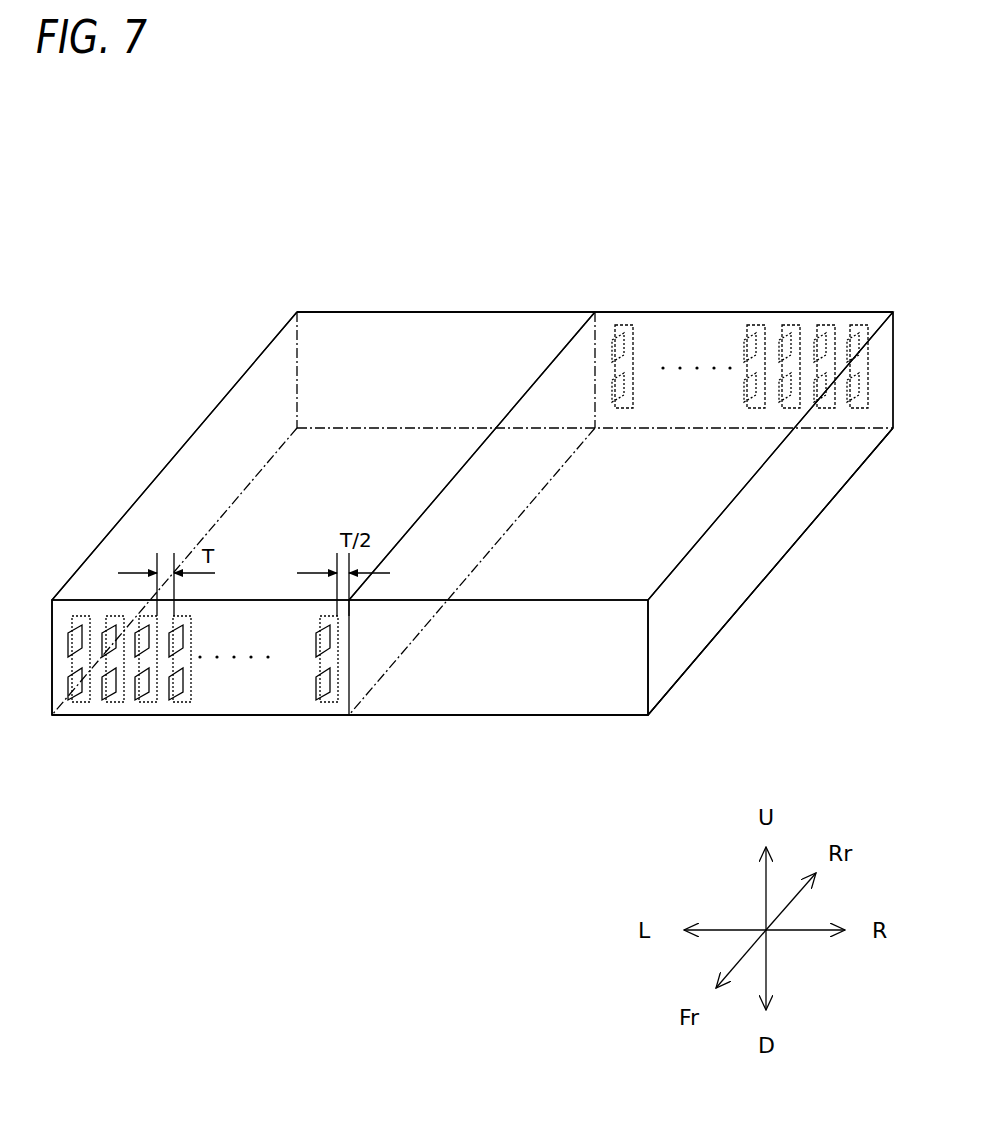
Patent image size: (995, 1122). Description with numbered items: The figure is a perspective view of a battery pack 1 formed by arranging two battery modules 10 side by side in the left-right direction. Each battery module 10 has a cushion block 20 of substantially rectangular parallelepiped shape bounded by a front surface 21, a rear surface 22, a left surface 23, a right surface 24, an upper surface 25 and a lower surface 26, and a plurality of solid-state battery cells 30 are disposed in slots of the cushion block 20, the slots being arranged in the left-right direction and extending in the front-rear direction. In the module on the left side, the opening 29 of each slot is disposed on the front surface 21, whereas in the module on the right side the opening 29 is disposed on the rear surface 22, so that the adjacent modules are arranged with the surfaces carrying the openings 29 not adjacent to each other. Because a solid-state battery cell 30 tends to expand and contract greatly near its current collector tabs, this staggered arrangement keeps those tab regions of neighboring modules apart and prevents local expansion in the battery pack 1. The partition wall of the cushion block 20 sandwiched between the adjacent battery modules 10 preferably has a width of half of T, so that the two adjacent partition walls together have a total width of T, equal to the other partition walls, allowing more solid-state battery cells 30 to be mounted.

The battery pack 1 is at (650, 166).
The battery module 10 is at (173, 403).
The cushion block 20 is at (329, 311).
The front surface 21 is at (205, 702).
The rear surface 22 is at (455, 332).
The left surface 23 is at (50, 652).
The right surface 24 is at (807, 492).
The upper surface 25 is at (298, 460).
The lower surface 26 is at (262, 717).
The opening 29 is at (623, 330).
The solid-state battery cell 30 is at (795, 330).